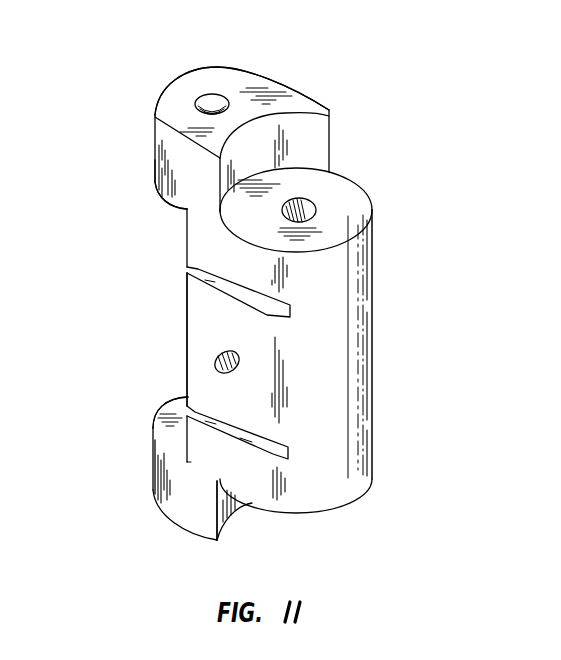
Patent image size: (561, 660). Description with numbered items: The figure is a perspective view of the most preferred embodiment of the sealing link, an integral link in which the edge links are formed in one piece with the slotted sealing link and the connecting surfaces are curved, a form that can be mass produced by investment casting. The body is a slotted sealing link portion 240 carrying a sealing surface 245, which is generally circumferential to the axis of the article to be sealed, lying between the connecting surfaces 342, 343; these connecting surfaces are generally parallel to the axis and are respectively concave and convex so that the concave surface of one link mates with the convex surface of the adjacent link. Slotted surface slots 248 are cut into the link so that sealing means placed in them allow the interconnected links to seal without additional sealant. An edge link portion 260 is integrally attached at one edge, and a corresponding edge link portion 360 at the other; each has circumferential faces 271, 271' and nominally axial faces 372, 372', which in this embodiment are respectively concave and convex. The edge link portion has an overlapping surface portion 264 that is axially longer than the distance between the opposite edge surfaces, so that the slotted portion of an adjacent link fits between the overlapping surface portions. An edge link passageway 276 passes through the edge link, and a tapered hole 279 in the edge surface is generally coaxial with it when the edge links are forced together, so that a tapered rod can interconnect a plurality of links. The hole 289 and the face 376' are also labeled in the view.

The slotted sealing link portion 240 is at (380, 242).
The sealing surface 245 is at (203, 333).
The slotted surface slot 248 is at (196, 275).
The edge link portion 260 is at (269, 72).
The overlapping surface portion 264 is at (158, 192).
The circumferential face 271 is at (122, 167).
The circumferential face 271' is at (318, 79).
The edge link passageway 276 is at (204, 102).
The tapered hole 279 is at (304, 208).
The threaded bore 289 is at (216, 360).
The connecting surface 342 is at (188, 305).
The connecting surface 343 is at (352, 321).
The edge link portion 360 is at (152, 502).
The axial face 372 is at (307, 337).
The axial face 372' is at (129, 91).
The top face of lower knuckle 376' is at (107, 418).